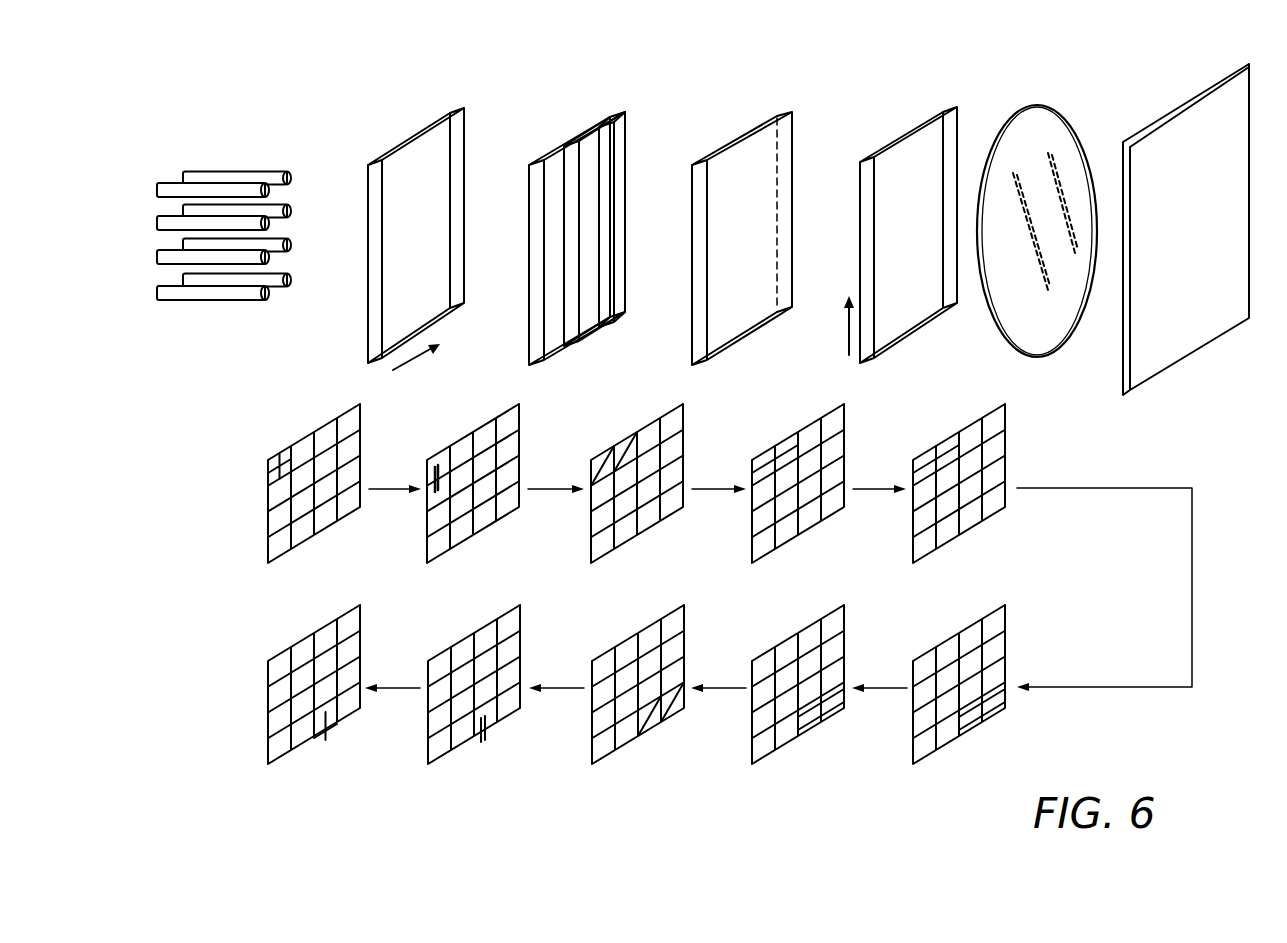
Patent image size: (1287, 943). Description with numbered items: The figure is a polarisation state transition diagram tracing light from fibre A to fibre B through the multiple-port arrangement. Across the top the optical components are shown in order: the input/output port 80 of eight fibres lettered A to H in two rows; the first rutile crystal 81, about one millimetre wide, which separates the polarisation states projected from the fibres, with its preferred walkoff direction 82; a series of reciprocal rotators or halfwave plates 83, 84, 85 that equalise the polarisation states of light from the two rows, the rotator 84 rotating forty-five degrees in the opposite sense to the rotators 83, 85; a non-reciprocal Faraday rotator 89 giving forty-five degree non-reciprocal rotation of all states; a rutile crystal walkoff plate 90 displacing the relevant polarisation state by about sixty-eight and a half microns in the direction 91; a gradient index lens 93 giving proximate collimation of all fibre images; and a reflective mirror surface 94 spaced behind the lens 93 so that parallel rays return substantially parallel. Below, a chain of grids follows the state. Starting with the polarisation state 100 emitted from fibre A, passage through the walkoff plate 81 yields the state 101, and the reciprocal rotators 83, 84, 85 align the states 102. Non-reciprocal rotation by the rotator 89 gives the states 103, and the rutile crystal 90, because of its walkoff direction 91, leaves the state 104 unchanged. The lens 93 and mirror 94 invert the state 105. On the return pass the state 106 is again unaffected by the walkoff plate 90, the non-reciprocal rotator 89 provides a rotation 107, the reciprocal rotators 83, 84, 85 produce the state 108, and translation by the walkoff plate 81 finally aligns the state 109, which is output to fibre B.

The input/output port 80 is at (231, 156).
The first rutile crystal 81 is at (398, 147).
The walkoff direction 82 is at (416, 370).
The reciprocal rotator 83 is at (544, 158).
The reciprocal rotator 84 is at (578, 140).
The reciprocal rotator 85 is at (612, 125).
The non-reciprocal Faraday rotator 89 is at (736, 144).
The rutile crystal walkoff plate 90 is at (897, 142).
The walkoff direction 91 is at (836, 329).
The gradient index lens 93 is at (1038, 132).
The reflective mirror surface 94 is at (1177, 342).
The polarisation state 100 is at (312, 548).
The polarisation state 101 is at (485, 538).
The polarisation states 102 is at (652, 528).
The polarisation states 103 is at (808, 528).
The polarisation state 104 is at (983, 530).
The polarisation state 105 is at (965, 725).
The polarization state 106 is at (805, 735).
The rotation 107 is at (640, 735).
The polarizations state 108 is at (468, 745).
The polarisation state 109 is at (352, 720).